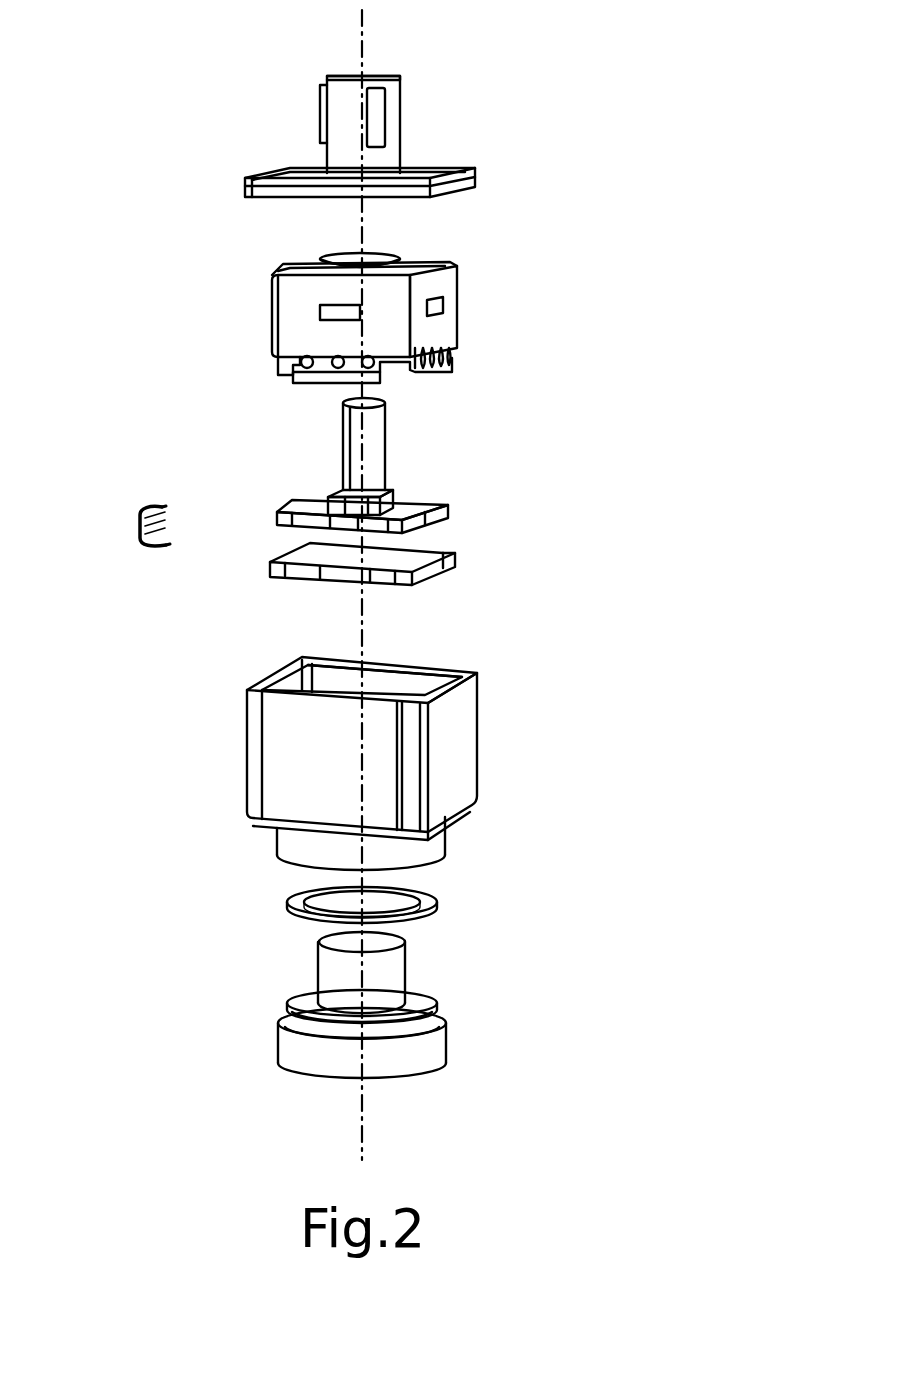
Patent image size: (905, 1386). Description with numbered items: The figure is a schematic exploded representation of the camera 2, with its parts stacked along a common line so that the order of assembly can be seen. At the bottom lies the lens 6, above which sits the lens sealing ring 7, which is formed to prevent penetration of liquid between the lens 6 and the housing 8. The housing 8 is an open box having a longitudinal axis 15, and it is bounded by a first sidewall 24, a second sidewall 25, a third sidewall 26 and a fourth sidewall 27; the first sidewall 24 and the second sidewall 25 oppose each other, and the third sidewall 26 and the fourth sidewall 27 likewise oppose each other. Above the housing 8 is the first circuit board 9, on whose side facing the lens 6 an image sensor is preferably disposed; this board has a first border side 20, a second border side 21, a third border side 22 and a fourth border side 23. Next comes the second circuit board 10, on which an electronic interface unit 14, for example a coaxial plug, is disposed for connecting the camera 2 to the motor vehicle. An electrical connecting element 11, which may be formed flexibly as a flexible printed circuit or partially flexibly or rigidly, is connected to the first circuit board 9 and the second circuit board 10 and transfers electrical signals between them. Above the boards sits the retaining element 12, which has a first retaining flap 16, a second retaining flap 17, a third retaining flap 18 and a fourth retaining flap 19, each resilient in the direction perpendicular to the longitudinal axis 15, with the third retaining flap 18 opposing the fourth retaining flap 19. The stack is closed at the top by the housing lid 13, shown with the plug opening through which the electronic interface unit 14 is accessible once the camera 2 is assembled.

The camera 2 is at (522, 110).
The lens 6 is at (437, 1043).
The lens sealing ring 7 is at (427, 905).
The housing 8 is at (374, 757).
The first circuit board 9 is at (405, 589).
The second circuit board 10 is at (445, 510).
The electrical connecting element 11 is at (138, 540).
The retaining element 12 is at (372, 350).
The housing lid 13 is at (472, 181).
The electronic interface unit 14 is at (380, 440).
The longitudinal axis 15 is at (364, 1132).
The first retaining flap 16 is at (450, 290).
The second retaining flap 17 is at (272, 312).
The third retaining flap 18 is at (293, 330).
The fourth retaining flap 19 is at (395, 372).
The first border side 20 is at (435, 575).
The second border side 21 is at (300, 557).
The third border side 22 is at (325, 570).
The fourth border side 23 is at (452, 548).
The first sidewall 24 is at (458, 765).
The second sidewall 25 is at (283, 680).
The third sidewall 26 is at (287, 765).
The fourth sidewall 27 is at (412, 664).